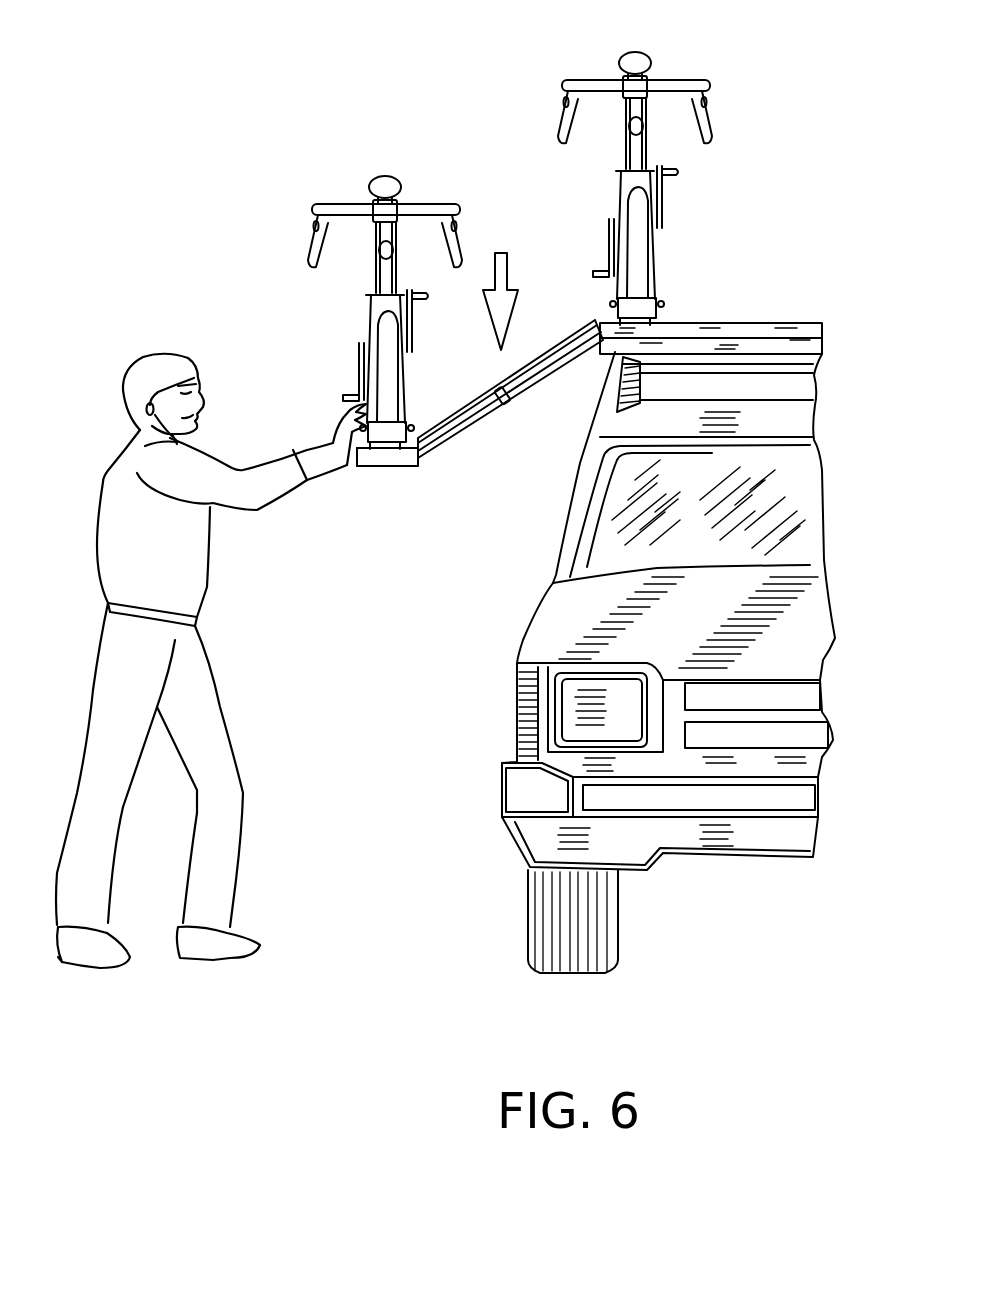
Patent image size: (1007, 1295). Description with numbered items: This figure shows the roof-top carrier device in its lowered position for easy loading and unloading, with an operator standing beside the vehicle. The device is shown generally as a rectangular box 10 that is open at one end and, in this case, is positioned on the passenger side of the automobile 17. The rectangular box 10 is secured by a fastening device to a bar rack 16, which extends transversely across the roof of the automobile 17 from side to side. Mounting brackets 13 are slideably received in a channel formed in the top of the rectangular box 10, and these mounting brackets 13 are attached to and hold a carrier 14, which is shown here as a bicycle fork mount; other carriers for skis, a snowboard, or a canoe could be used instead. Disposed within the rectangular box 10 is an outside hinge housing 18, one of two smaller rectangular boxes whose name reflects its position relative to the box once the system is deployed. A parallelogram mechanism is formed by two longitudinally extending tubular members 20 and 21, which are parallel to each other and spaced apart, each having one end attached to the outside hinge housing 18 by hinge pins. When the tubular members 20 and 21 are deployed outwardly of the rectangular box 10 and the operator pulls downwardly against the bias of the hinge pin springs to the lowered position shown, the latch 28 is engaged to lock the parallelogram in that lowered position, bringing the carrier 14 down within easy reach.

The rectangular box 10 is at (810, 334).
The mounting brackets 13 is at (660, 325).
The carrier 14 is at (656, 305).
The bar rack 16 is at (810, 351).
The automobile 17 is at (486, 624).
The outside hinge housing 18 is at (405, 455).
The longitudinally extending tubular member 20 is at (527, 375).
The longitudinally extending tubular member 21 is at (527, 375).
The latch 28 is at (502, 404).